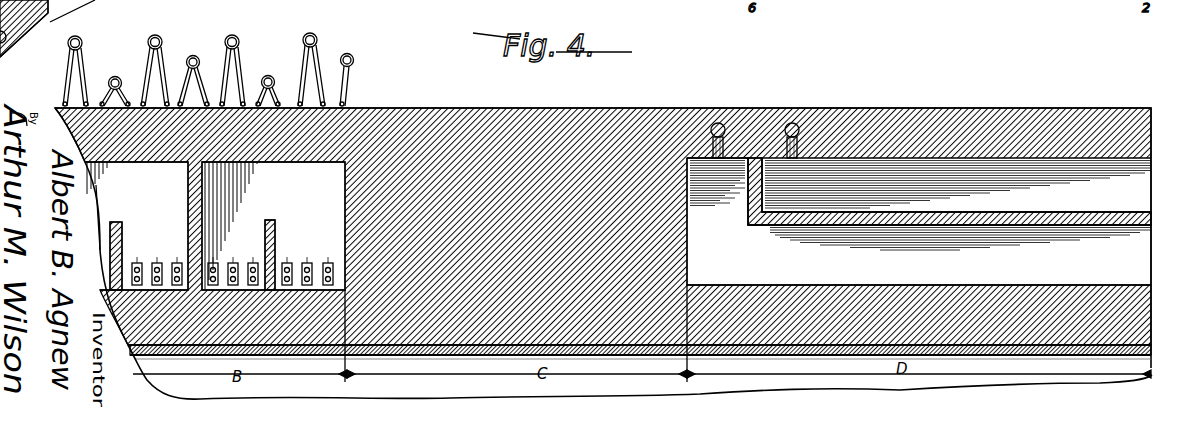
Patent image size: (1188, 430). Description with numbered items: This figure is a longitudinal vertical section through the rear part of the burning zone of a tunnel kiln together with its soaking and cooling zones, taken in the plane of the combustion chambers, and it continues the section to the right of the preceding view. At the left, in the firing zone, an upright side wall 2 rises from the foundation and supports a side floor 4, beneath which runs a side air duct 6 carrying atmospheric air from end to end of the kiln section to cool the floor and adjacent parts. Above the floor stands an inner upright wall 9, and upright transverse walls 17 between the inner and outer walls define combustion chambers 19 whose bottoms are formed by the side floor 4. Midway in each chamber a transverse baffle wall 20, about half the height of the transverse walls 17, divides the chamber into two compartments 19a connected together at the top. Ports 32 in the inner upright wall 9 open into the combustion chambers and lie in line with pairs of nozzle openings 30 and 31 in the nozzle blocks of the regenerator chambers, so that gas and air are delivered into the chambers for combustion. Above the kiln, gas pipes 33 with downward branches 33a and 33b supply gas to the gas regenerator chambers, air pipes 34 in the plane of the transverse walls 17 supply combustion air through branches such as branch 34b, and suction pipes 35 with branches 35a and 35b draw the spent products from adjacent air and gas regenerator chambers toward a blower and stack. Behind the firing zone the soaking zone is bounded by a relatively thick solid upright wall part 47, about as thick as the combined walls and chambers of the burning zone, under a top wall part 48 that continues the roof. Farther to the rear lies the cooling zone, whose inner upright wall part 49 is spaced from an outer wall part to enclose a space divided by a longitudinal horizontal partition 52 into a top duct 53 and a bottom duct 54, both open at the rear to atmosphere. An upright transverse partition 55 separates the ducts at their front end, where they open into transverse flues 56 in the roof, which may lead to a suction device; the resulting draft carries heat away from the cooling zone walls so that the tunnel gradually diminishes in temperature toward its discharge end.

The side wall 2 is at (1143, 367).
The side floor 4 is at (1147, 323).
The side air duct 6 is at (718, 365).
The inner upright wall 9 is at (105, 203).
The upright transverse wall 17 is at (186, 220).
The combustion chamber 19 is at (174, 225).
The compartment 19a is at (271, 251).
The transverse baffle wall 20 is at (271, 222).
The nozzle opening 30 is at (222, 258).
The nozzle opening 31 is at (250, 266).
The port 32 is at (152, 258).
The gas pipe 33 is at (114, 76).
The gas pipe branch 33a is at (278, 84).
The gas pipe branch 33b is at (254, 84).
The air pipe 34 is at (371, 56).
The air pipe branch 34b is at (350, 81).
The suction pipe 35 is at (83, 41).
The suction pipe branch 35a is at (93, 72).
The suction pipe branch 35b is at (69, 68).
The solid upright wall part 47 is at (549, 150).
The top wall part 48 is at (476, 108).
The inner upright wall part 49 is at (1138, 199).
The horizontal partition 52 is at (1148, 217).
The top duct 53 is at (1008, 175).
The bottom duct 54 is at (1122, 262).
The upright transverse partition 55 is at (748, 204).
The transverse flue 56 is at (787, 122).